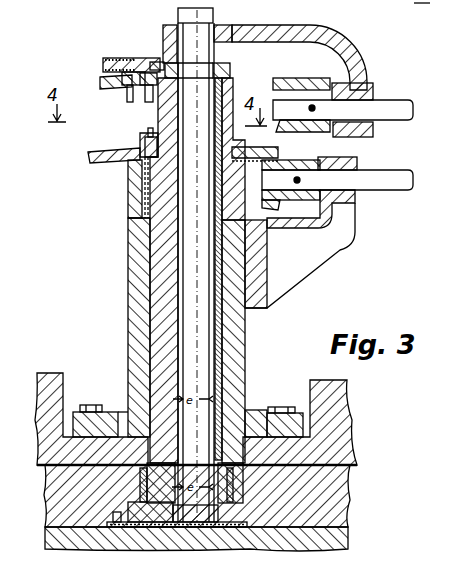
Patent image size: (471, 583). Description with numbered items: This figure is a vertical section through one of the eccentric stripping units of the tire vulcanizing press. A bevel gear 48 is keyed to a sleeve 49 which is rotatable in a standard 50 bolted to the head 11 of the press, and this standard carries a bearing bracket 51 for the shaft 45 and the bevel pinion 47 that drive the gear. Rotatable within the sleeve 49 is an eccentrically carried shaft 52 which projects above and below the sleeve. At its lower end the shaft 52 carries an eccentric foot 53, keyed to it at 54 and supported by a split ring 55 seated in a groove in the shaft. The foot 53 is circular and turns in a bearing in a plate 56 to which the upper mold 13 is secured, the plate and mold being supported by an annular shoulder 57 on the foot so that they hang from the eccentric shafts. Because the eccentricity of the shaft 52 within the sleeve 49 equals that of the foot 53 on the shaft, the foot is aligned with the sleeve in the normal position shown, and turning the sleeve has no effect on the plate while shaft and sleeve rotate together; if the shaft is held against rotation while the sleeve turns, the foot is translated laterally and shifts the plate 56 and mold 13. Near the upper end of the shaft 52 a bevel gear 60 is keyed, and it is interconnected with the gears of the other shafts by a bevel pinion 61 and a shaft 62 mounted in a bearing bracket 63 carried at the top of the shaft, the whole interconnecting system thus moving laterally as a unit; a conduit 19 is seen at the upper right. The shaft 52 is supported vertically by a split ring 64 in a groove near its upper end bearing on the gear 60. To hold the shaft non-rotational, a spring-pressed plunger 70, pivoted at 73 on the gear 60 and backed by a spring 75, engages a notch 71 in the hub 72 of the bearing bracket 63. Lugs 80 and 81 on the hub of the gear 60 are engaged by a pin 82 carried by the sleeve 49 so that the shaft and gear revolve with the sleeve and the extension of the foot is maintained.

The base plate 11 is at (340, 428).
The upper mold 13 is at (342, 541).
The conduit 19 is at (426, 3).
The shaft 45 is at (391, 188).
The bevel pinion 47 is at (275, 206).
The bevel gear 48 is at (97, 162).
The sleeve 49 is at (156, 253).
The standard 50 is at (128, 299).
The bearing bracket 51 is at (337, 258).
The eccentric shaft 52 is at (205, 8).
The eccentric foot 53 is at (118, 531).
The key 54 is at (120, 437).
The split ring 55 is at (197, 530).
The plate 56 is at (340, 500).
The annular shoulder 57 is at (250, 413).
The bevel gear 60 is at (104, 84).
The bevel pinion 61 is at (300, 90).
The shaft 62 is at (391, 104).
The bearing bracket 63 is at (280, 32).
The split ring 64 is at (229, 69).
The spring-pressed plunger 70 is at (147, 60).
The notch 71 is at (158, 60).
The hub 72 is at (226, 30).
The pivotal connection 73 is at (135, 104).
The spring 75 is at (146, 58).
The lug 80 is at (145, 145).
The lug 81 is at (246, 139).
The pin 82 is at (149, 136).